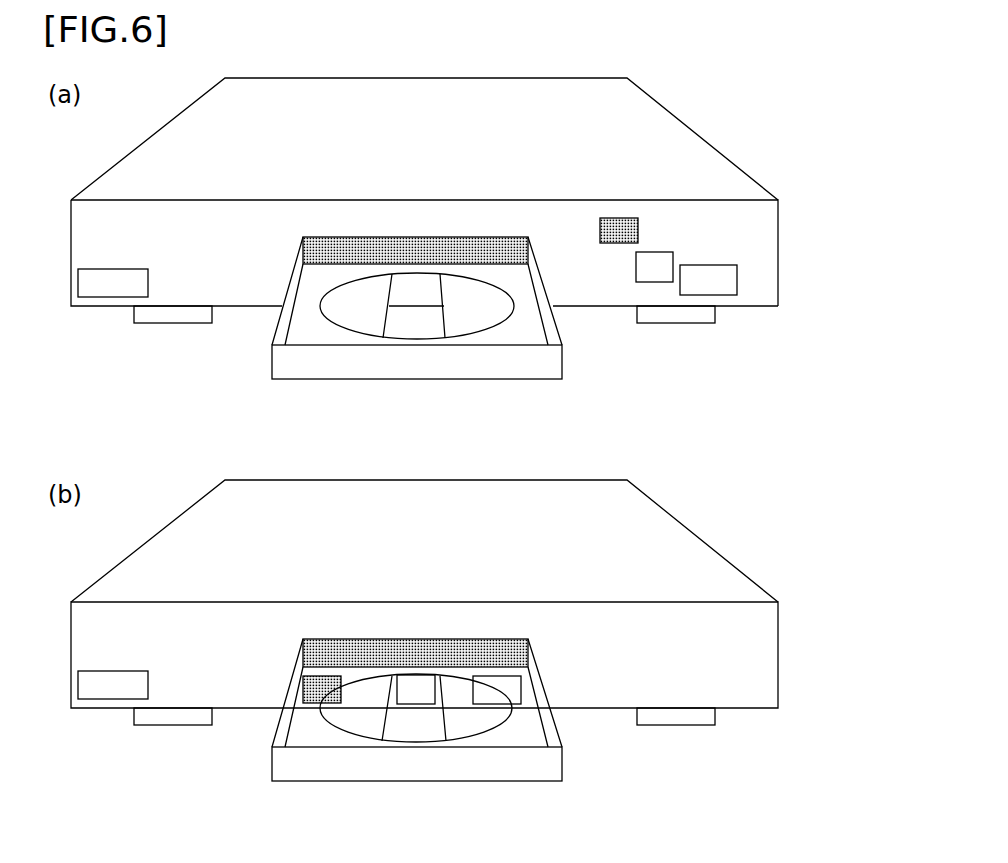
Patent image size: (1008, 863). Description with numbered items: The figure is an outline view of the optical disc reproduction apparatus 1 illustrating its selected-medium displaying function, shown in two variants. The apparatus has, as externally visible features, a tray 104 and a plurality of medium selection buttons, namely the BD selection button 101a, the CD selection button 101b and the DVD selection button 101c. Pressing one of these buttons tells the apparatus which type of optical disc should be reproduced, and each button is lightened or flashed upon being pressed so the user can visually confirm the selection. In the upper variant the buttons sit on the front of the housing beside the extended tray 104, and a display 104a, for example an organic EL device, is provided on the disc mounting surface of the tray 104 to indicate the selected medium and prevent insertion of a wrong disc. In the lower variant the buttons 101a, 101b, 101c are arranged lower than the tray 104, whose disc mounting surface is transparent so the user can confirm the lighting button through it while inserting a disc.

The optical disc reproduction apparatus 1 is at (777, 152).
The BD selection button 101a is at (617, 217).
The CD selection button 101b is at (675, 236).
The DVD selection button 101c is at (737, 277).
The tray 104 is at (310, 330).
The display 104a is at (465, 323).